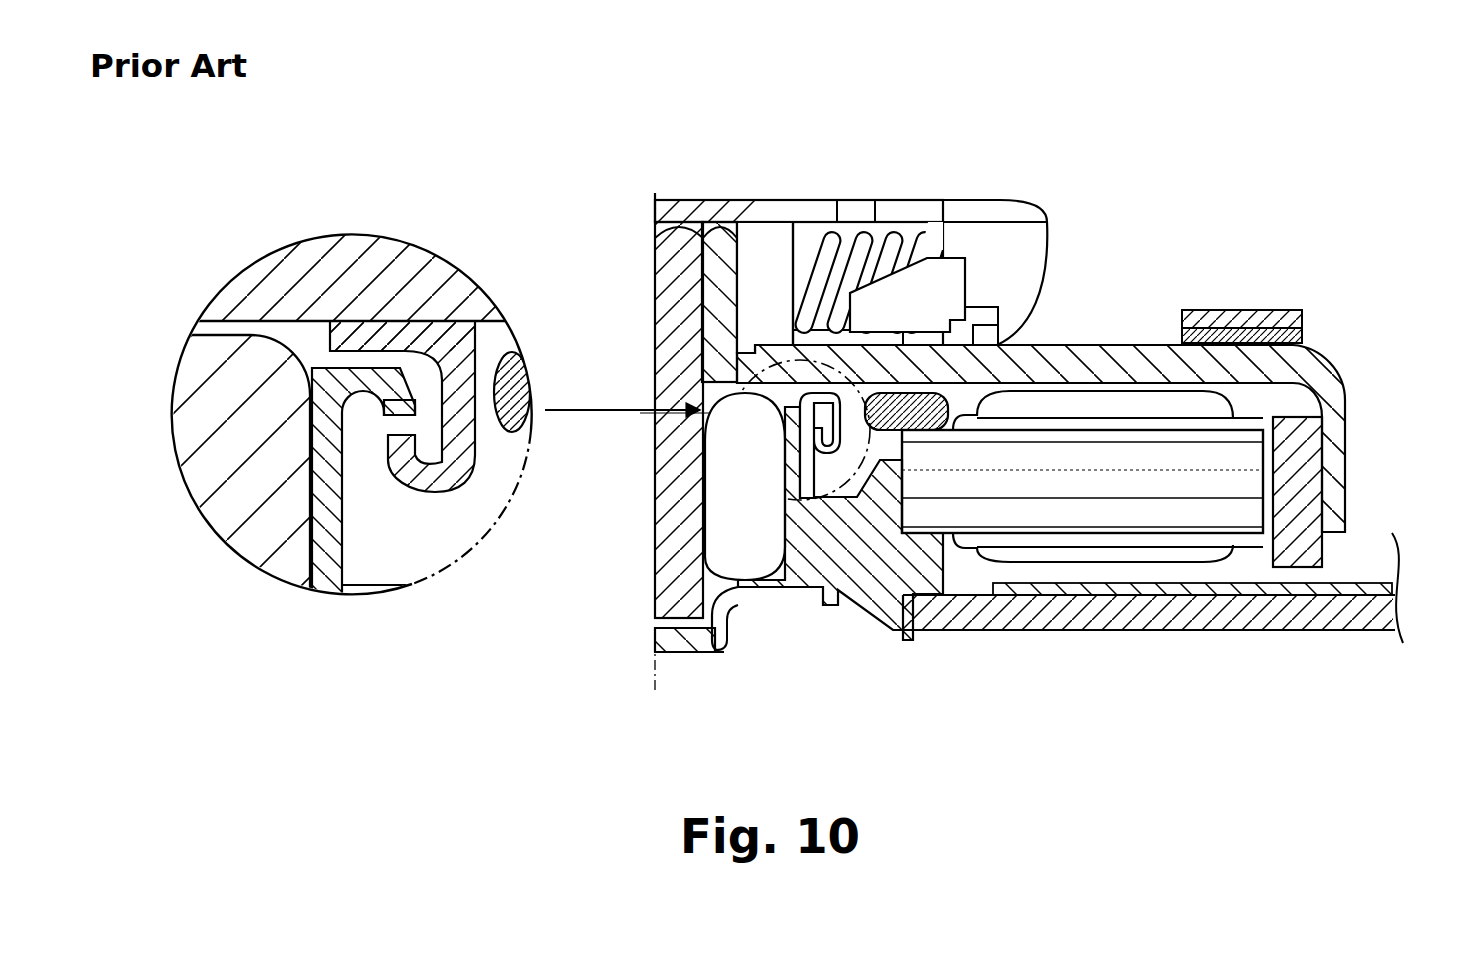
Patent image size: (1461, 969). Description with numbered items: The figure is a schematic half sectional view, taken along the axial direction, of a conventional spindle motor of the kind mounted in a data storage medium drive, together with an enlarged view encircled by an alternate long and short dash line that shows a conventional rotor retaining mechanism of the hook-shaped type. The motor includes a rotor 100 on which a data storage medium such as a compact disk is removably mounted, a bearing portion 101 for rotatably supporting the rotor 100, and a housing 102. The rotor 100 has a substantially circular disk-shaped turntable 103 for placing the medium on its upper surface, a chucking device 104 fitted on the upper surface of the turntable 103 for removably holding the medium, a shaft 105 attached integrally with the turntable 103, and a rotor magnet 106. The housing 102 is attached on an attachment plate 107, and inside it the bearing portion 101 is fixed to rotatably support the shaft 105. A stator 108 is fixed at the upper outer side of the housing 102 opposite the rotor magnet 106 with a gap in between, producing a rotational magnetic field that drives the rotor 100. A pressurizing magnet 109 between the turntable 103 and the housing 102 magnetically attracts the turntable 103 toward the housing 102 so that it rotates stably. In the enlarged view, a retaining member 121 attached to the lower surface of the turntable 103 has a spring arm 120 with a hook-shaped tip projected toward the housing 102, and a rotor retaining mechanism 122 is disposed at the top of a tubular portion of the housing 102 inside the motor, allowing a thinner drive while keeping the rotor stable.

The rotor 100 is at (1102, 270).
The bearing portion 101 is at (230, 500).
The housing 102 is at (325, 582).
The turntable 103 is at (326, 256).
The chucking device 104 is at (775, 215).
The shaft 105 is at (668, 258).
The rotor magnet 106 is at (1305, 492).
The attachment plate 107 is at (1088, 620).
The stator 108 is at (1137, 403).
The pressurizing magnet 109 is at (920, 397).
The spring arm 120 is at (478, 360).
The retaining member 121 is at (405, 330).
The rotor retaining mechanism 122 is at (400, 398).